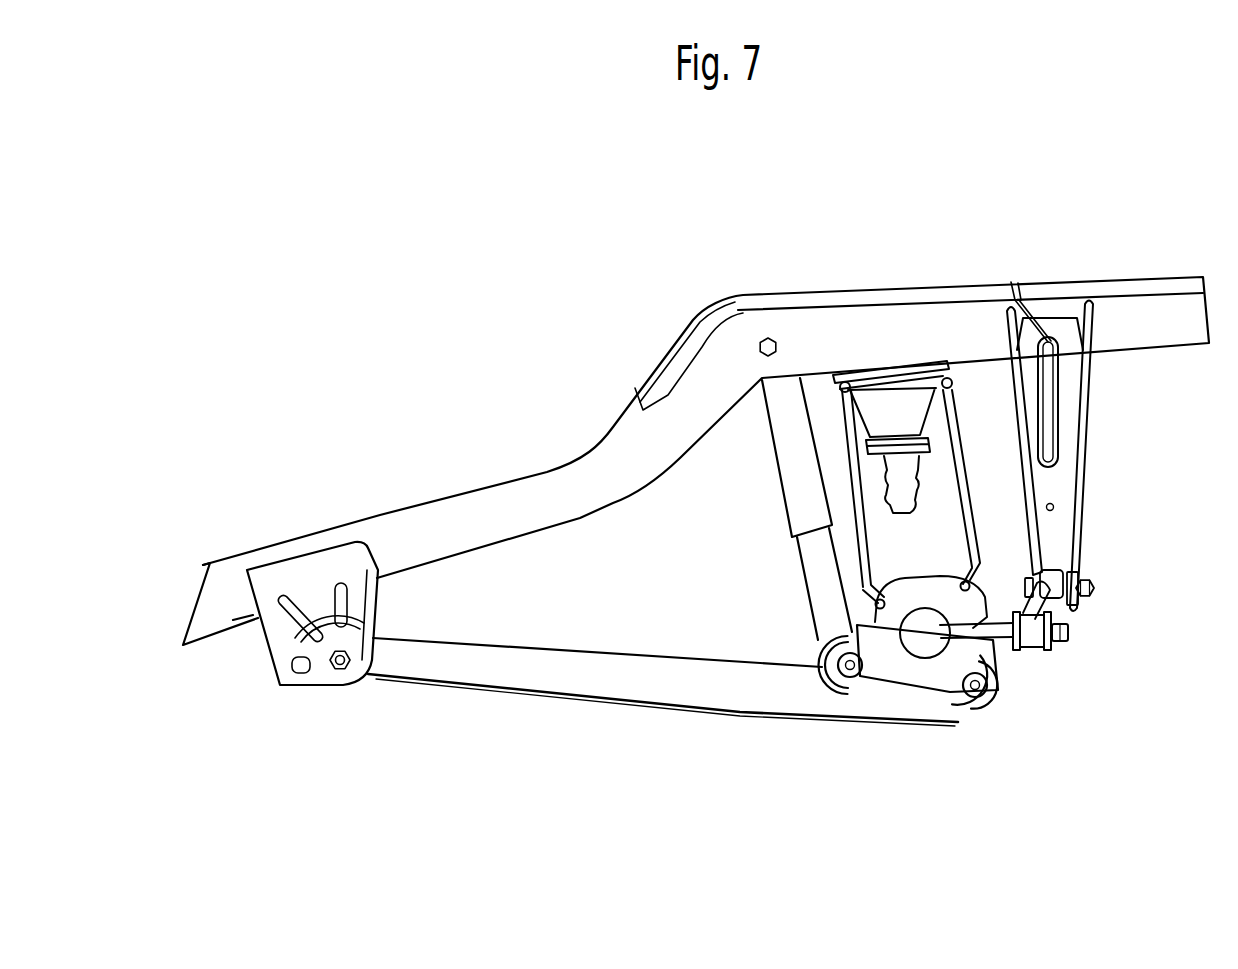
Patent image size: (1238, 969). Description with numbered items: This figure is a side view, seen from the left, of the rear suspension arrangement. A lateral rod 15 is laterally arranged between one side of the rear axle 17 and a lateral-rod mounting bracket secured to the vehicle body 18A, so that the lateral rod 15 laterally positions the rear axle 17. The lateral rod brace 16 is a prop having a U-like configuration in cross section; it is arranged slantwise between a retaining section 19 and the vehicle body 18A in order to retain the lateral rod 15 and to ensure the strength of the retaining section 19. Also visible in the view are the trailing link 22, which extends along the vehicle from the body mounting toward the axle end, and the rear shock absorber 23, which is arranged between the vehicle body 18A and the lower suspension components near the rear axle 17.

The vehicle body 18A is at (944, 335).
The lateral rod brace 16 is at (1090, 415).
The lateral rod 15 is at (1055, 562).
The retaining section 19 is at (1077, 603).
The rear axle 17 is at (922, 645).
The trailing link 22 is at (573, 680).
The rear shock absorber 23 is at (790, 482).